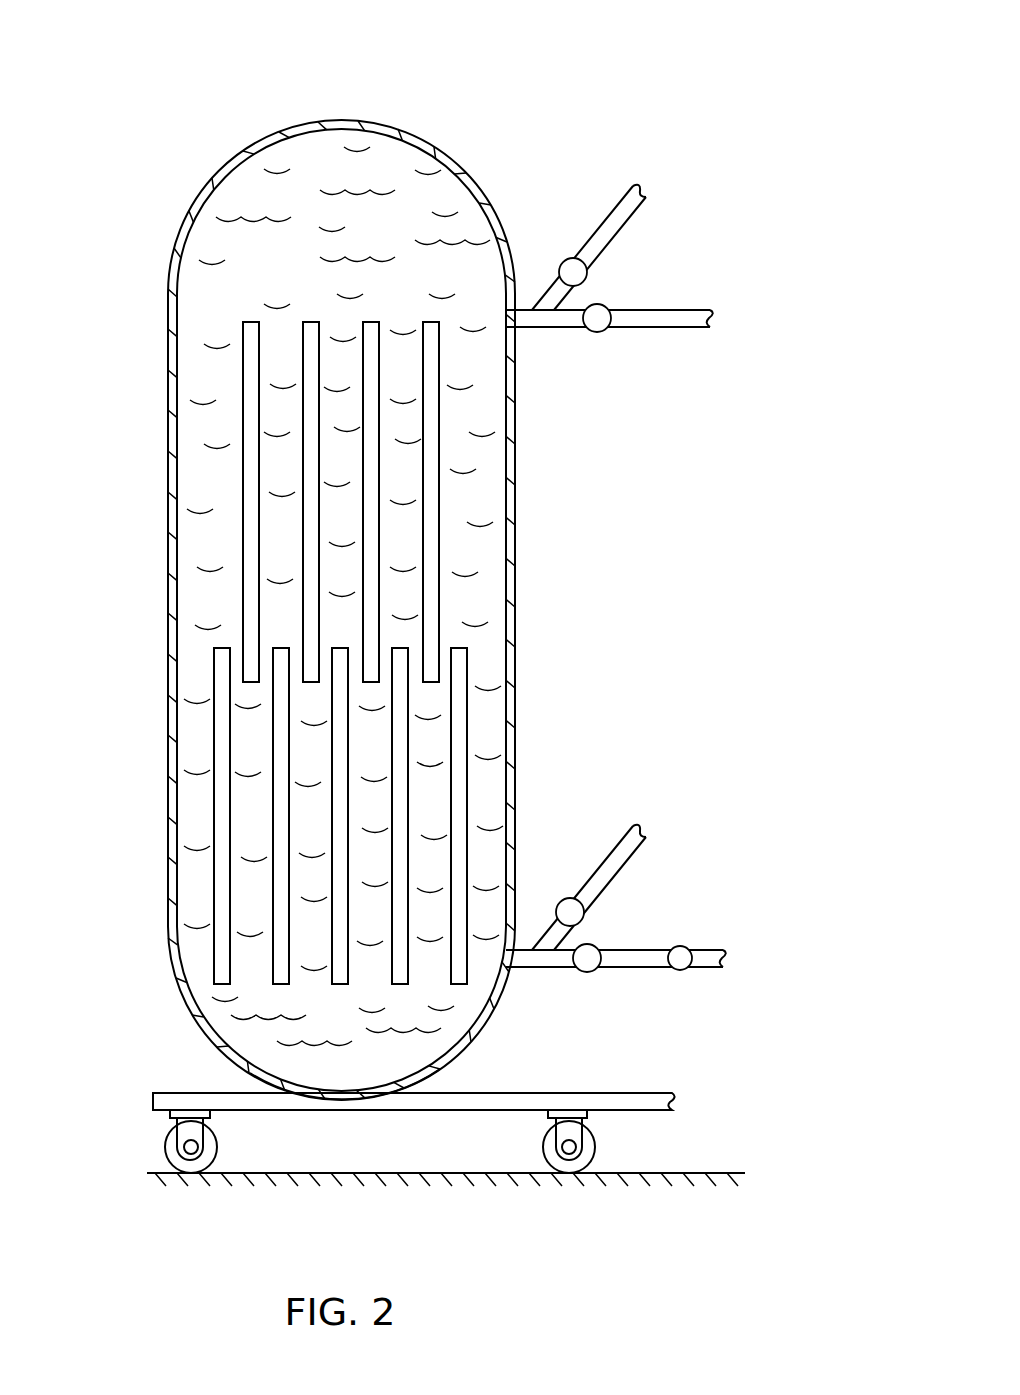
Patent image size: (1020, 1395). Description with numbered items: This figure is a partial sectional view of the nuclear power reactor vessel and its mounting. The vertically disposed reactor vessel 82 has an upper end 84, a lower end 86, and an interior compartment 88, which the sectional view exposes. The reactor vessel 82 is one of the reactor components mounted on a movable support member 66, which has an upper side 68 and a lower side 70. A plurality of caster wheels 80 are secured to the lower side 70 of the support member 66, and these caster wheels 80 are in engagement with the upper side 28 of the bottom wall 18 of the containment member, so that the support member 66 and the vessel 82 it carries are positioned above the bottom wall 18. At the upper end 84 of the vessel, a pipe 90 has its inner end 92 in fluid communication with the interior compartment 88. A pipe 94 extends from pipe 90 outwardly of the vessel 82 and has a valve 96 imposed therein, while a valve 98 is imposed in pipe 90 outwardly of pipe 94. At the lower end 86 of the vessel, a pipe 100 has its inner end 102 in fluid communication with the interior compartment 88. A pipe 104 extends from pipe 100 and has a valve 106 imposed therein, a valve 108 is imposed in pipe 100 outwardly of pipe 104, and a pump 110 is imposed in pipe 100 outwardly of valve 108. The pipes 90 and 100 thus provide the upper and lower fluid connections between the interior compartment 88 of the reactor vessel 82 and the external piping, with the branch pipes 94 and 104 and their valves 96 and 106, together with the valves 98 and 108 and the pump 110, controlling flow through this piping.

The bottom wall 18 is at (452, 1180).
The upper side 28 is at (688, 1173).
The movable support member 66 is at (632, 1093).
The upper side 68 is at (192, 1093).
The lower side 70 is at (302, 1112).
The caster wheels 80 is at (166, 1147).
The reactor vessel 82 is at (455, 152).
The upper end 84 is at (350, 122).
The lower end 86 is at (425, 1088).
The interior compartment 88 is at (404, 627).
The pipe 90 is at (563, 328).
The inner end 92 is at (510, 327).
The pipe 94 is at (620, 232).
The valve 96 is at (571, 258).
The valve 98 is at (603, 332).
The pipe 100 is at (570, 968).
The inner end 102 is at (510, 950).
The pipe 104 is at (613, 851).
The valve 106 is at (587, 913).
The valve 108 is at (592, 943).
The pump 110 is at (685, 968).